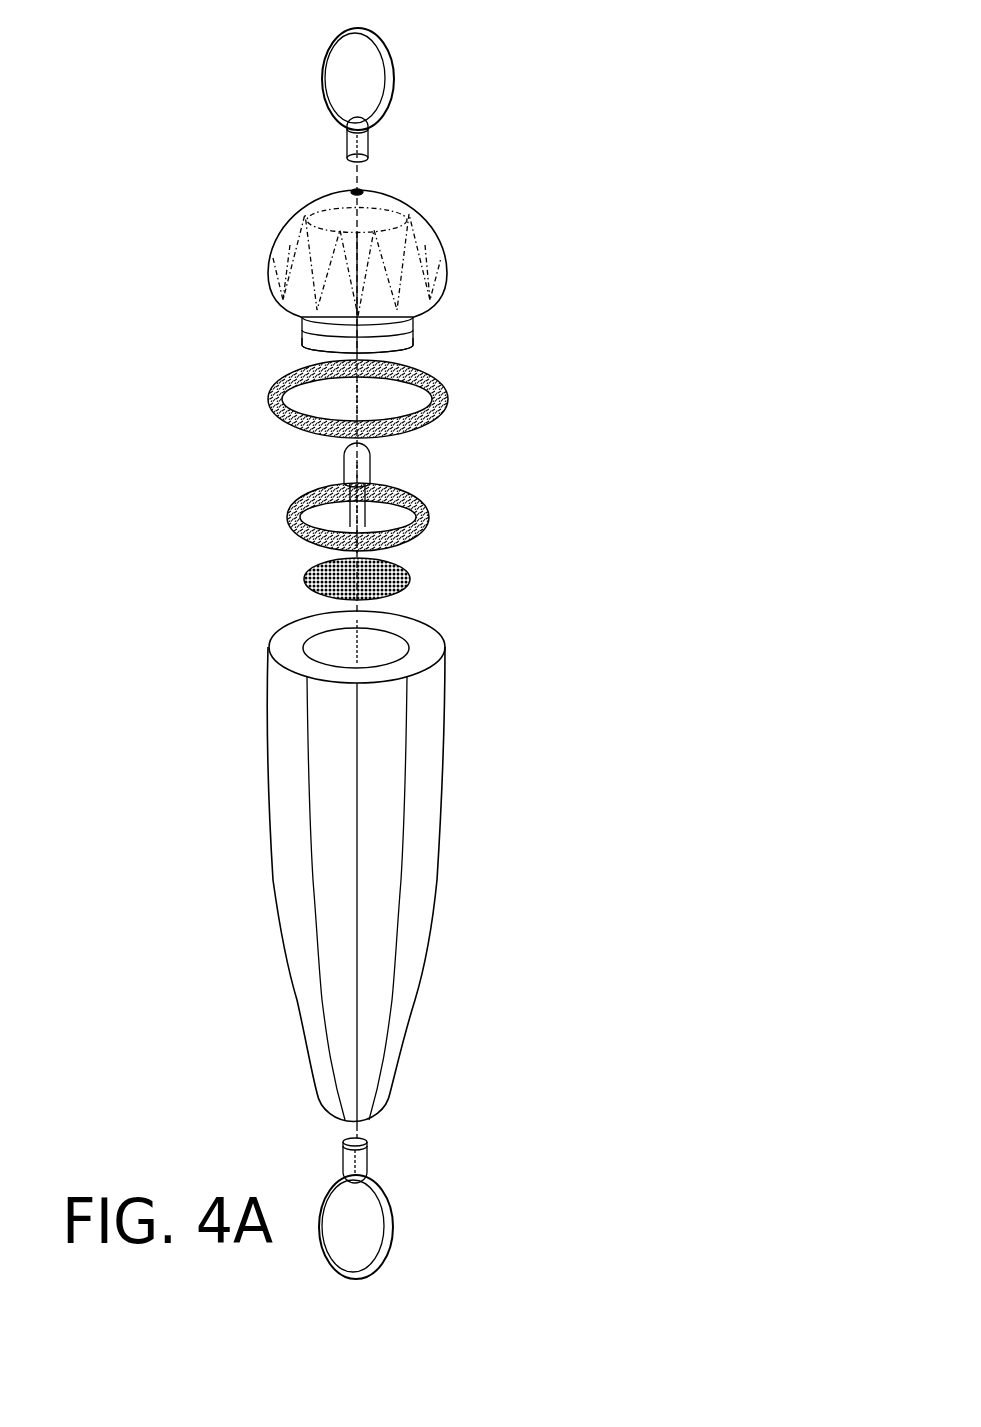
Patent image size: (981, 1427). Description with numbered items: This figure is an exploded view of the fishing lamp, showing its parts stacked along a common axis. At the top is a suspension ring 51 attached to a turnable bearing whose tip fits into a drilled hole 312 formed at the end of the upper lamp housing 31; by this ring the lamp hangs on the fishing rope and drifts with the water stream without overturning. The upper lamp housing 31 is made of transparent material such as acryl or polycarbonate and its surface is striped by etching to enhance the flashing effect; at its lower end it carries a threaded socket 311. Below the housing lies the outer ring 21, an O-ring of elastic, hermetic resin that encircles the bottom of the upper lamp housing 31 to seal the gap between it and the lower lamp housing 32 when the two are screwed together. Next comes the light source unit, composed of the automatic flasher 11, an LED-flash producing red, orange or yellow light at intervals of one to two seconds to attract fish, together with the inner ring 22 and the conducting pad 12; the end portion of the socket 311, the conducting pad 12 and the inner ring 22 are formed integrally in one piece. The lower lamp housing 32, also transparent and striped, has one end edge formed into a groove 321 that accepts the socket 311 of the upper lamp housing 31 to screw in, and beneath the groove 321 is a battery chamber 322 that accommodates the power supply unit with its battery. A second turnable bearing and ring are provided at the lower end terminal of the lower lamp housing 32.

The suspension ring 51 is at (395, 75).
The upper lamp housing 31 is at (272, 188).
The drilled hole 312 is at (365, 193).
The threaded socket 311 is at (357, 340).
The outer ring 21 is at (292, 395).
The automatic flasher 11 is at (343, 462).
The inner ring 22 is at (300, 530).
The conducting pad 12 is at (313, 572).
The lower lamp housing 32 is at (383, 842).
The groove 321 is at (375, 675).
The battery chamber 322 is at (357, 827).